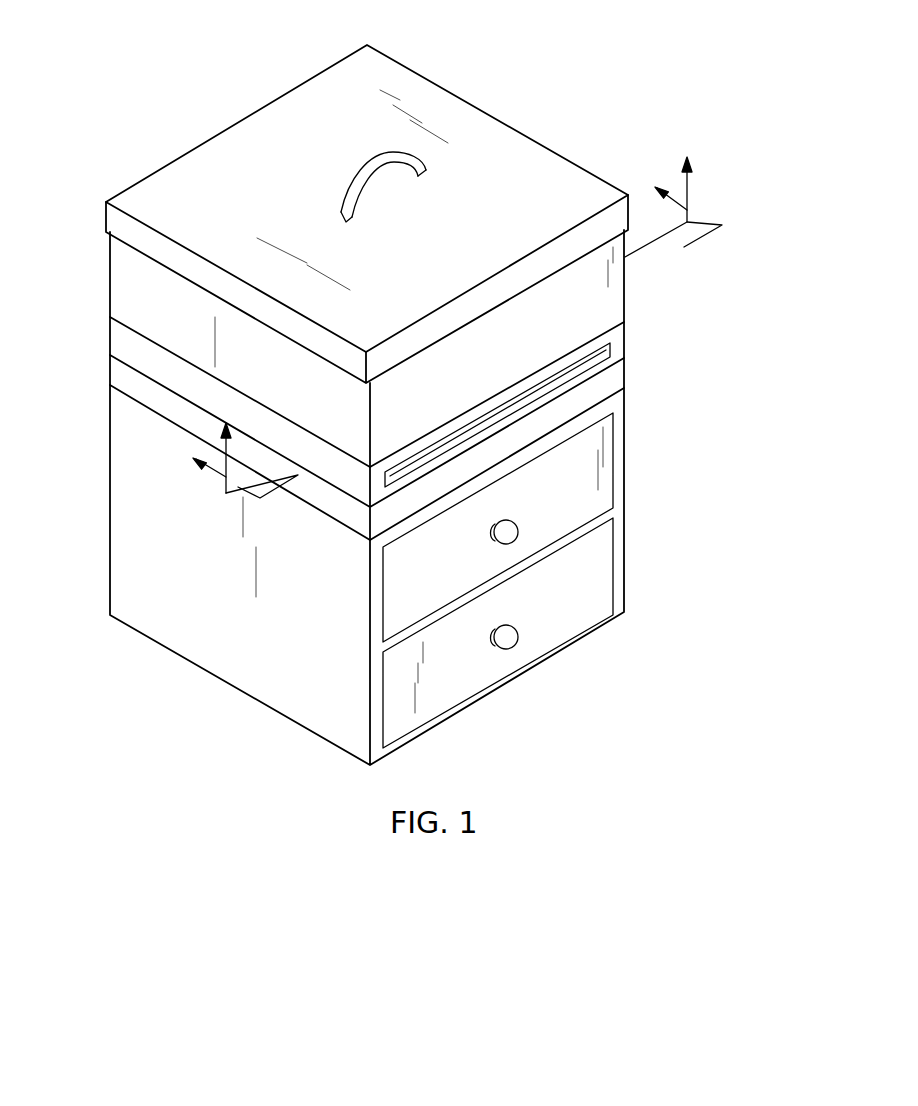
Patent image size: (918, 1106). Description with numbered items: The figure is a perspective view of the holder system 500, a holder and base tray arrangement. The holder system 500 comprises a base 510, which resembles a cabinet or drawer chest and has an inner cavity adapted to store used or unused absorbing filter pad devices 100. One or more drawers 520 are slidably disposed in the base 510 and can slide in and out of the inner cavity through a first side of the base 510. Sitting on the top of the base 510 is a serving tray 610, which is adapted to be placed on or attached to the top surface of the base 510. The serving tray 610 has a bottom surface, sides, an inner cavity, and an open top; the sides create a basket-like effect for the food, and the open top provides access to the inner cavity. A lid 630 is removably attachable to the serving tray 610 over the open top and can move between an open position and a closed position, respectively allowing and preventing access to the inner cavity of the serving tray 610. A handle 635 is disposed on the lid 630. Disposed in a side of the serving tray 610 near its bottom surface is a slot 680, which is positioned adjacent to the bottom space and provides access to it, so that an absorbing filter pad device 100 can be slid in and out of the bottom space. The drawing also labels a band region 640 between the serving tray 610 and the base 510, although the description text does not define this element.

The holder system 500 is at (183, 795).
The base 510 is at (118, 512).
The drawers 520 is at (545, 635).
The serving tray 610 is at (128, 286).
The lid 630 is at (385, 68).
The handle 635 is at (407, 160).
The frame 640 is at (628, 378).
The absorbing filter pad device 100 is at (612, 347).
The slot 680 is at (668, 346).